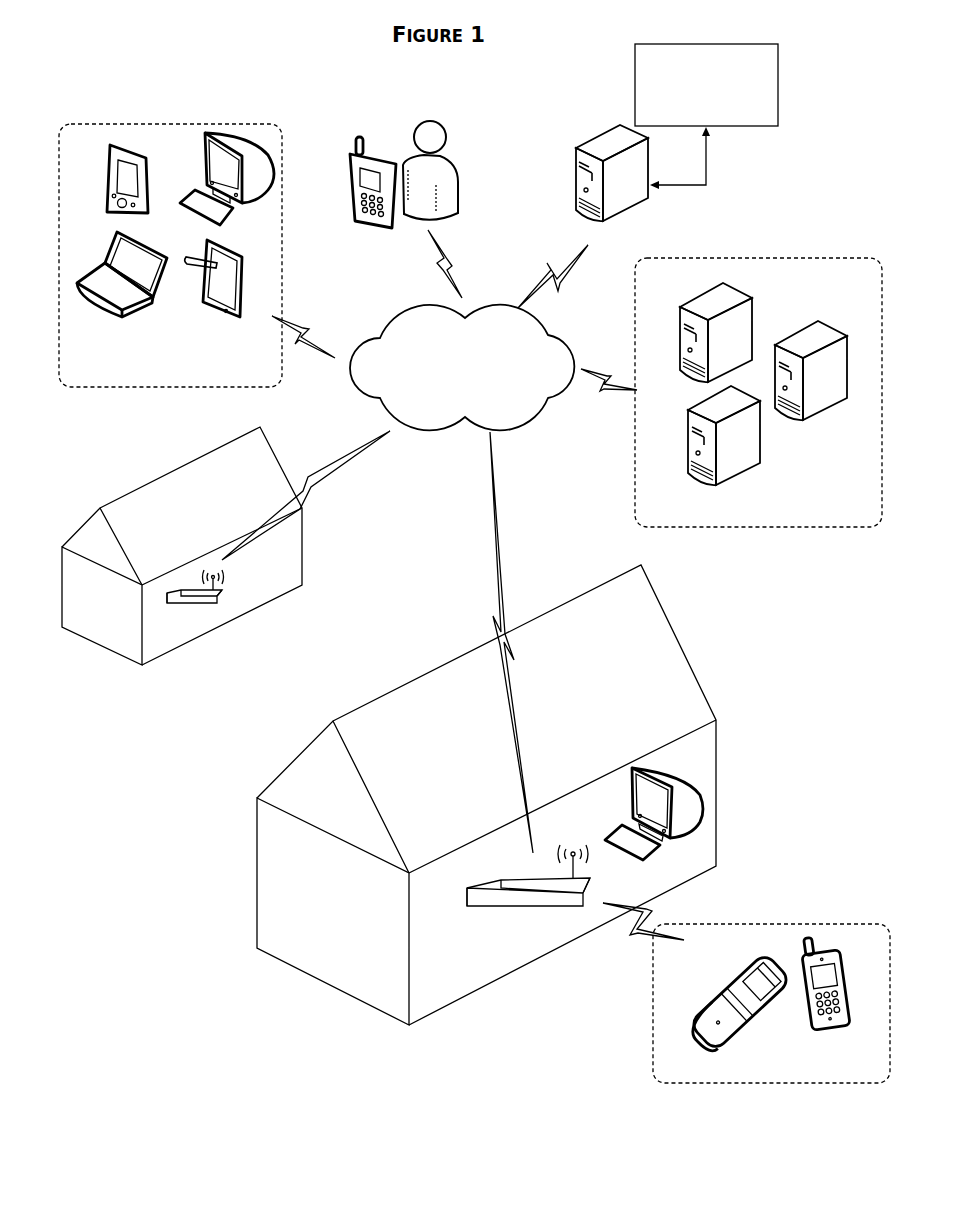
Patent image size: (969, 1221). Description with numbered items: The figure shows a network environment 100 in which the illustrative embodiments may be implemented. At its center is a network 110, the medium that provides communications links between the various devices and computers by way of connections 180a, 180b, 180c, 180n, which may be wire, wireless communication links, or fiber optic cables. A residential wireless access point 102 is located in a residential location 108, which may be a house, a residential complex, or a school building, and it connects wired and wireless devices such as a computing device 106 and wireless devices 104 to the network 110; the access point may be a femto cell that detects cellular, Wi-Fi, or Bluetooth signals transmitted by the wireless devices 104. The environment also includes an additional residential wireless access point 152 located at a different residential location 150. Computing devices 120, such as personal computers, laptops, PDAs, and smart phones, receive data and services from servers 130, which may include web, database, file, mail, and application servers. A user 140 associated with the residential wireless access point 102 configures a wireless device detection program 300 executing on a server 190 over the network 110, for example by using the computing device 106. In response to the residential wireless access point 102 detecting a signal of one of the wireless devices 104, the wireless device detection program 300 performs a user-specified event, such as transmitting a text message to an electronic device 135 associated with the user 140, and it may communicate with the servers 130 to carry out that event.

The network environment 100 is at (243, 50).
The residential wireless access point 102 is at (473, 914).
The wireless devices 104 is at (746, 993).
The computing device 106 is at (698, 767).
The residential location 108 is at (242, 795).
The network 110 is at (462, 368).
The computing devices 120 is at (170, 255).
The servers 130 is at (758, 392).
The electronic device 135 is at (341, 146).
The user 140 is at (468, 152).
The residential location 150 is at (124, 672).
The residential wireless access point 152 is at (202, 613).
The connection 180a is at (495, 568).
The connection 180b is at (323, 332).
The connection 180c is at (465, 276).
The connection 180n is at (602, 402).
The server 190 is at (583, 216).
The wireless device detection program 300 is at (706, 116).